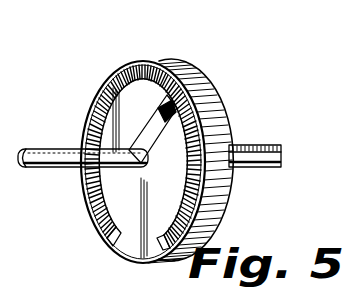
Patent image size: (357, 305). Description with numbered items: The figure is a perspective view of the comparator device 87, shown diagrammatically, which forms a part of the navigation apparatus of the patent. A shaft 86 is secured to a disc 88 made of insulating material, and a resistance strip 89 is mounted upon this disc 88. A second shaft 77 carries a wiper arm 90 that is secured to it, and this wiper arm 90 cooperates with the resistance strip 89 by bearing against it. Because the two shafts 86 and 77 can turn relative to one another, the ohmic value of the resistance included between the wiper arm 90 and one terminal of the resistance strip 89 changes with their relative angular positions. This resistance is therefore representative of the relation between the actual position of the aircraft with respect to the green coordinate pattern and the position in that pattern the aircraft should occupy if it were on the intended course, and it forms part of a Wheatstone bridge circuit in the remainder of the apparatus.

The shaft 77 is at (38, 148).
The shaft 86 is at (253, 147).
The comparator device 87 is at (178, 54).
The disc 88 is at (139, 245).
The resistance strip 89 is at (183, 77).
The wiper arm 90 is at (200, 102).